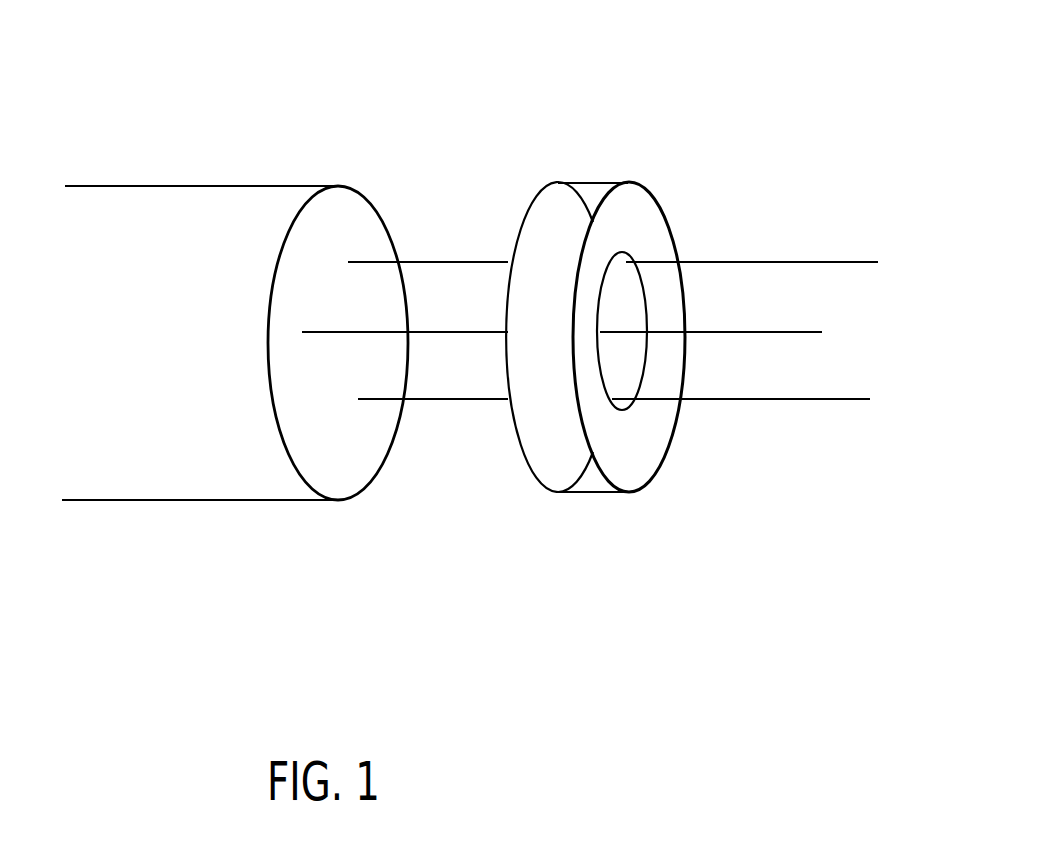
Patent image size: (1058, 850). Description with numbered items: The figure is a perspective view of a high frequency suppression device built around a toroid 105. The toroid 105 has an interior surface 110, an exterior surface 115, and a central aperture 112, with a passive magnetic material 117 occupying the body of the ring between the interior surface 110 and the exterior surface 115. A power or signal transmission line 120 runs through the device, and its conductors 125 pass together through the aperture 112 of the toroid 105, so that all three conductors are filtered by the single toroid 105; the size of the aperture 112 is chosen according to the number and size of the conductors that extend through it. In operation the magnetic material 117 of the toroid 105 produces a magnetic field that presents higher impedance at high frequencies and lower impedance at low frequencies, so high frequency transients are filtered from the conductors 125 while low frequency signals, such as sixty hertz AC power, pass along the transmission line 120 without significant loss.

The toroid 105 is at (611, 304).
The interior surface 110 is at (647, 293).
The aperture 112 is at (623, 357).
The exterior surface 115 is at (552, 408).
The passive magnetic material 117 is at (590, 478).
The power or signal transmission line 120 is at (133, 380).
The conductors 125 is at (795, 262).